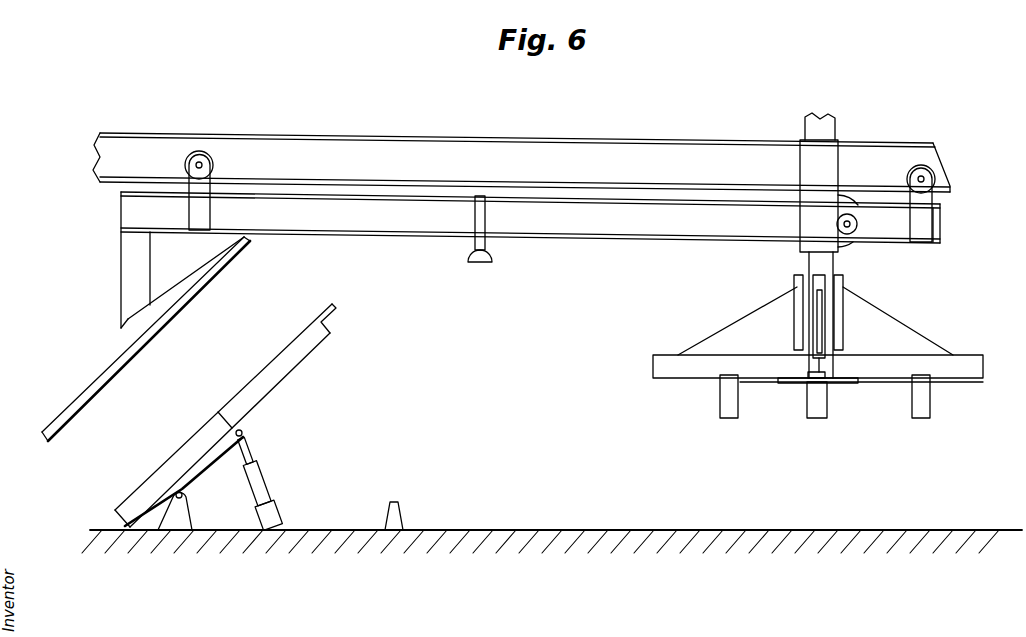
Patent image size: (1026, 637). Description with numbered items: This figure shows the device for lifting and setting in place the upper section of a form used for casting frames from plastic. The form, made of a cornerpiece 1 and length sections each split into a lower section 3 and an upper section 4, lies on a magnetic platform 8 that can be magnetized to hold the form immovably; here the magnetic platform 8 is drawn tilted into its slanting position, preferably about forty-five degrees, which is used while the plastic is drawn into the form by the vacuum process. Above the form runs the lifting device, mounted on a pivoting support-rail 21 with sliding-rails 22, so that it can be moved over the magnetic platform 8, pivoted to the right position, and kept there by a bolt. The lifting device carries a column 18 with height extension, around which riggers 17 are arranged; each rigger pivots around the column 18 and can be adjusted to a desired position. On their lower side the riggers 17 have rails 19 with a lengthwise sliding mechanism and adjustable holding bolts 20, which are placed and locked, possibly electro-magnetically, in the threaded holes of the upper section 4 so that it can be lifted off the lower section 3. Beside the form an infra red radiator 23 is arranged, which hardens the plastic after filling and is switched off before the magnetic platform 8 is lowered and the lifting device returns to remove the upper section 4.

The cornerpiece 1 is at (280, 415).
The lower section 3 is at (280, 415).
The upper section 4 is at (322, 337).
The magnetic platform 8 is at (280, 417).
The riggers 17 is at (757, 332).
The carriage column 18 is at (825, 262).
The cross beam 19 is at (975, 373).
The holding bolts 20 is at (920, 407).
The pivoting support-rail 21 is at (712, 162).
The sliding-rails 22 is at (640, 223).
The infra red radiator 23 is at (135, 347).